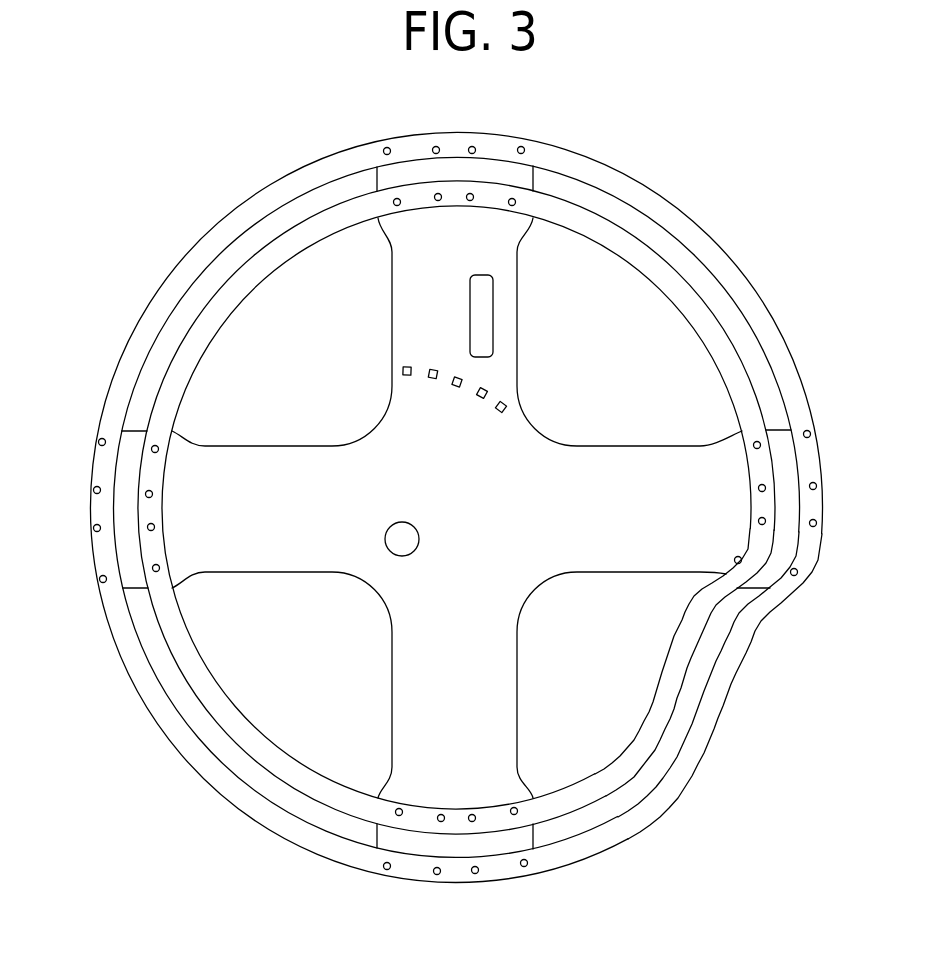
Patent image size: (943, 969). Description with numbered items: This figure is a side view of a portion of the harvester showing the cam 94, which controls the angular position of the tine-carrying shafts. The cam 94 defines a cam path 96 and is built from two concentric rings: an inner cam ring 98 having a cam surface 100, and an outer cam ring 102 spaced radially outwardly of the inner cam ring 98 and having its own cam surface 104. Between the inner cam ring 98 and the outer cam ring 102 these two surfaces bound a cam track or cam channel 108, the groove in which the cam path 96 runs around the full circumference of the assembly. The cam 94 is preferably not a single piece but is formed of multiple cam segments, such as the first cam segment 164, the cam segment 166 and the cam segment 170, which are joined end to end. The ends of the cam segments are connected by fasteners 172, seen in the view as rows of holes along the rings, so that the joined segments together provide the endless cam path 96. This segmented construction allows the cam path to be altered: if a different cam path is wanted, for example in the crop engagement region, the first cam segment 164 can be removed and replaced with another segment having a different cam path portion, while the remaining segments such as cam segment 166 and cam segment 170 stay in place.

The cam 94 is at (757, 260).
The cam path 96 is at (157, 377).
The inner cam ring 98 is at (295, 243).
The cam surface 100 is at (323, 200).
The outer cam ring 102 is at (336, 154).
The cam surface 104 is at (247, 232).
The cam channel 108 is at (203, 280).
The first cam segment 164 is at (698, 768).
The cam segment 166 is at (802, 363).
The cam segment 170 is at (138, 712).
The fasteners 172 is at (98, 446).